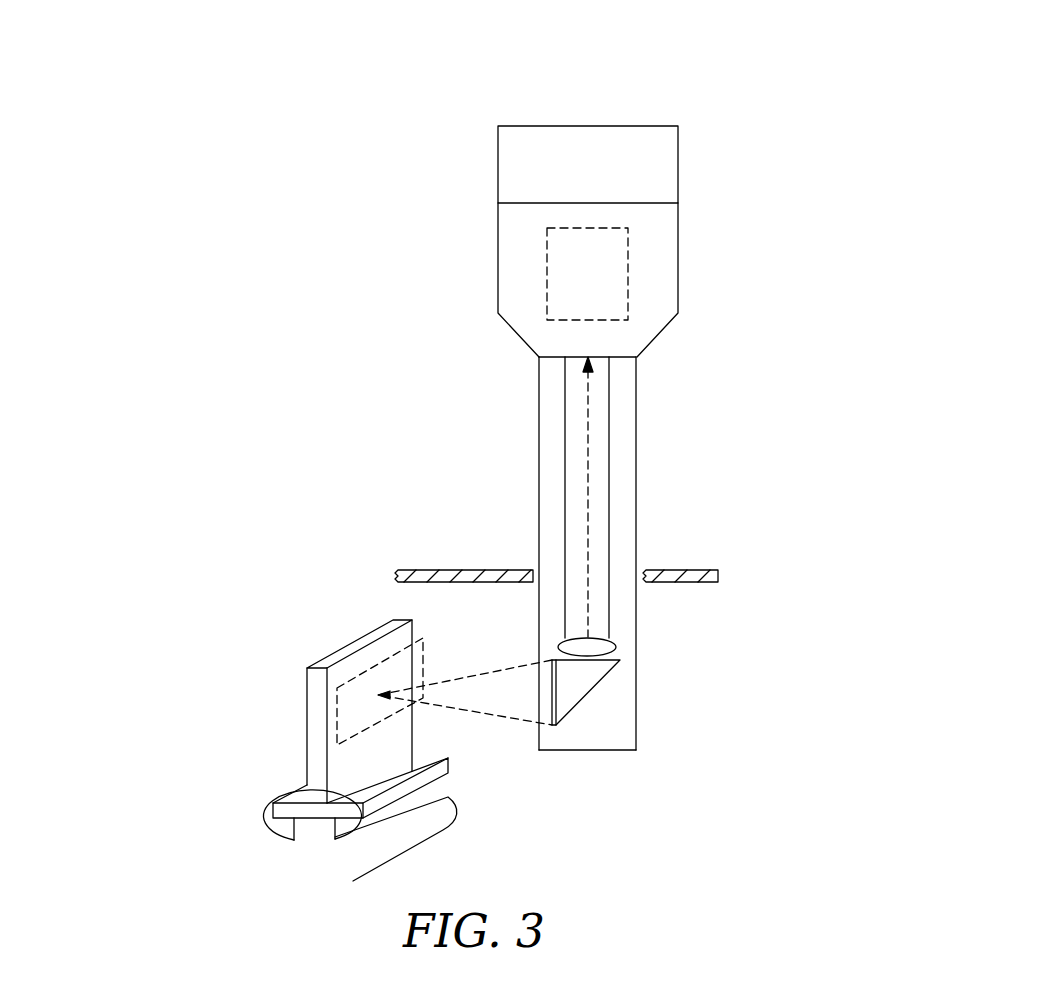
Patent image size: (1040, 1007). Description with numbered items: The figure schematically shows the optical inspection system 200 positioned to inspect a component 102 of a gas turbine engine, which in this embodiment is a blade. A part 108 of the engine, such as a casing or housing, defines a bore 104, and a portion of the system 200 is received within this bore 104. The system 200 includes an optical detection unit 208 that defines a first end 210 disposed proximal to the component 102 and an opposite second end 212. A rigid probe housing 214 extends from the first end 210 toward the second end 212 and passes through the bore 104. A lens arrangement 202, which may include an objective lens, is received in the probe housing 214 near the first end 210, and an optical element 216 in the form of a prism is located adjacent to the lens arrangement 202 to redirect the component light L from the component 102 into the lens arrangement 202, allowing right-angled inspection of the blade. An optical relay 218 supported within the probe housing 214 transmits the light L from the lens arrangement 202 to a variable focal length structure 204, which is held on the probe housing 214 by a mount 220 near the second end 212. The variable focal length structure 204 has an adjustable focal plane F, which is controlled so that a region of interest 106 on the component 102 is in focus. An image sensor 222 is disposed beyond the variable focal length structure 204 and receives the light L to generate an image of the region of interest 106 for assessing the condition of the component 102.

The system 200 is at (890, 83).
The image sensor 222 is at (679, 160).
The mount 220 is at (679, 228).
The variable focal length structure 204 is at (629, 281).
The second end 212 is at (520, 373).
The optical detection unit 208 is at (722, 382).
The probe housing 214 is at (637, 470).
The optical relay 218 is at (610, 510).
The component light L is at (589, 421).
The lens arrangement 202 is at (618, 647).
The optical element 216 is at (584, 686).
The first end 210 is at (641, 748).
The bore 104 is at (536, 570).
The part 108 is at (710, 566).
The component 102 is at (295, 660).
The region of interest 106 is at (392, 673).
The focal plane F is at (380, 667).